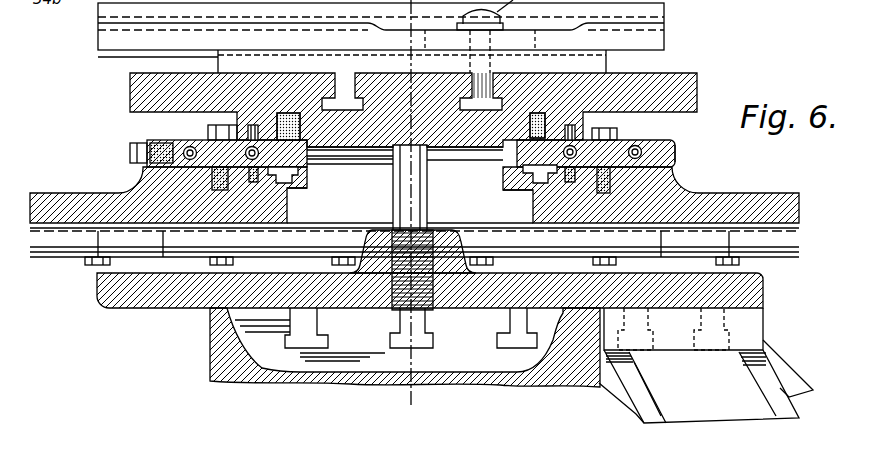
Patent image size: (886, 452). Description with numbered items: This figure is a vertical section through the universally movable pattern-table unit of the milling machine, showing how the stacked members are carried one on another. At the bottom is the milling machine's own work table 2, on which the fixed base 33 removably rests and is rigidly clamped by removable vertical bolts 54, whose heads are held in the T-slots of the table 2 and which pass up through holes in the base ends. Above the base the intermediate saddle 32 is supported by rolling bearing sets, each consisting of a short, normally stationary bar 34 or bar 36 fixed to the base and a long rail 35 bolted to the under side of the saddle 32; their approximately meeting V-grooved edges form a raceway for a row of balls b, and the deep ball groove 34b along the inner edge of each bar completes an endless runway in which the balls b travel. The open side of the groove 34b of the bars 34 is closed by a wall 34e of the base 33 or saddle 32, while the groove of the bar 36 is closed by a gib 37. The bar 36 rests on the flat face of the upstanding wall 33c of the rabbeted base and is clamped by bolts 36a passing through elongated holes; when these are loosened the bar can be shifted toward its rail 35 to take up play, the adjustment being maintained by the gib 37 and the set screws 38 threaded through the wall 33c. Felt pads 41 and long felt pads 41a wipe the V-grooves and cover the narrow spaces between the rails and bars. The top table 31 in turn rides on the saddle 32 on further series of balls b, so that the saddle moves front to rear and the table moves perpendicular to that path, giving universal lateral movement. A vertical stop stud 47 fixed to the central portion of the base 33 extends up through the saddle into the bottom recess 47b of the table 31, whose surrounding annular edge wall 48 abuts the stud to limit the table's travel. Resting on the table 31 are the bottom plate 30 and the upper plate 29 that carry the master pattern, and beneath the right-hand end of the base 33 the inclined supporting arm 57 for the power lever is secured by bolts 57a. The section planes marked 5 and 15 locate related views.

The work table 2 is at (209, 340).
The section line 5- 5 is at (411, 405).
The section line 15- 15 is at (125, 153).
The plate 29 is at (666, 14).
The bottom plate 30 is at (607, 62).
The top table 31 is at (170, 93).
The saddle 32 is at (30, 200).
The base 33 is at (758, 288).
The upstanding wall 33c is at (147, 143).
The bar 34 is at (633, 145).
The ball groove 34b is at (686, 172).
The wall 34e is at (665, 141).
The rail 35 is at (304, 168).
The bar 36 is at (222, 168).
The bolts 36a is at (222, 125).
The gib 37 is at (187, 143).
The set screws 38 is at (143, 170).
The felt pads 41 is at (571, 125).
The felt pads 41a is at (566, 231).
The stud 47 is at (395, 200).
The bottom recess 47b is at (450, 152).
The annular edge wall 48 is at (323, 146).
The vertical bolts 54 is at (300, 320).
The supporting arm 57 is at (654, 397).
The bolts 57a is at (641, 322).
The balls b is at (262, 148).